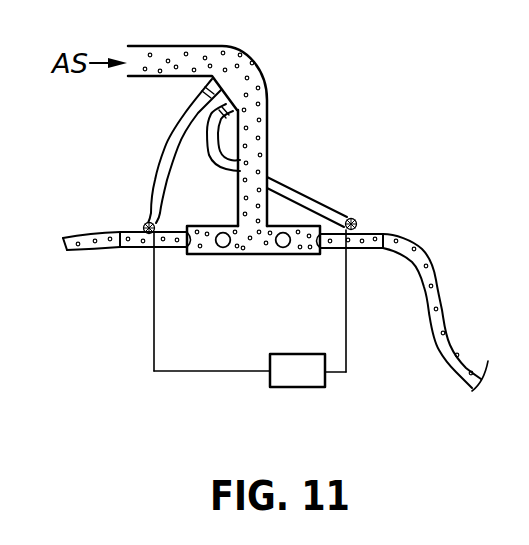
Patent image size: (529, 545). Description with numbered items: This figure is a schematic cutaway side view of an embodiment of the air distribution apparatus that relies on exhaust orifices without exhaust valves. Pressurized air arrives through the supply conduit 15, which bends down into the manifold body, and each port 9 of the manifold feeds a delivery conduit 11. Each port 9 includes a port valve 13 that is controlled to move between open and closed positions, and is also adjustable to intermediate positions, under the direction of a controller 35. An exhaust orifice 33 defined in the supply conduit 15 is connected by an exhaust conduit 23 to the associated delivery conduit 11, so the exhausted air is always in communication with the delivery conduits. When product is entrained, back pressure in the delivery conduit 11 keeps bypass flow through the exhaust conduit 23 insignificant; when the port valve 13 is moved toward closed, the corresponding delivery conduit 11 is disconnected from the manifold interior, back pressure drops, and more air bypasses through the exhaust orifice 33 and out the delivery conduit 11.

The port 9 is at (222, 248).
The delivery conduit 11 is at (440, 282).
The port valve 13 is at (360, 252).
The supply conduit 15 is at (267, 118).
The exhaust conduit 23 is at (313, 203).
The exhaust orifice 33 is at (207, 88).
The controller 35 is at (290, 388).